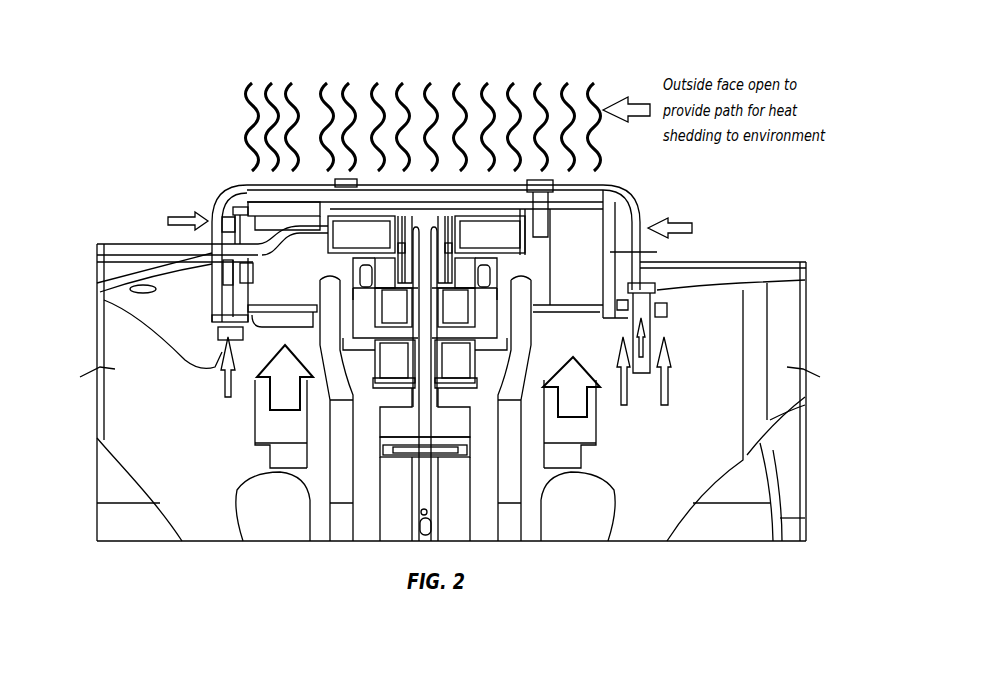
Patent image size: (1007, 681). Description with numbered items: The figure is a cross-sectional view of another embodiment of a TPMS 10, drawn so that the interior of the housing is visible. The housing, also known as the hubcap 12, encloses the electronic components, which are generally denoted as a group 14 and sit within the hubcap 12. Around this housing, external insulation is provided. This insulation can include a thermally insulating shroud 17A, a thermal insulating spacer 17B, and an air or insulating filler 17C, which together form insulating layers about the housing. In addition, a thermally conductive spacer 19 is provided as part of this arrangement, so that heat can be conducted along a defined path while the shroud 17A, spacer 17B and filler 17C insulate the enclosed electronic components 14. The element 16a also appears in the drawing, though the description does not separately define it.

The TPMS 10 is at (755, 47).
The hubcap 12 is at (248, 203).
The electronic components 14 is at (505, 233).
The housing cavity 16a is at (568, 233).
The thermally insulating shroud 17A is at (622, 198).
The thermal insulating spacer 17B is at (247, 322).
The air or insulating filler 17C is at (623, 233).
The thermally conductive spacer 19 is at (325, 202).